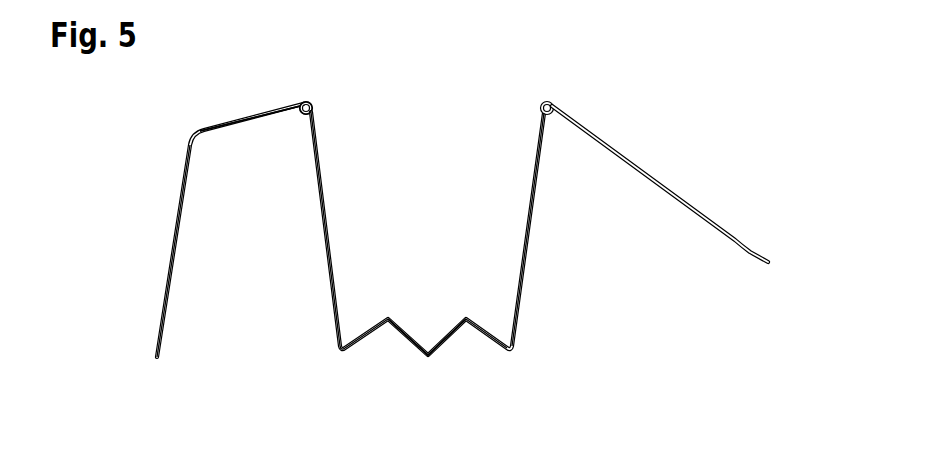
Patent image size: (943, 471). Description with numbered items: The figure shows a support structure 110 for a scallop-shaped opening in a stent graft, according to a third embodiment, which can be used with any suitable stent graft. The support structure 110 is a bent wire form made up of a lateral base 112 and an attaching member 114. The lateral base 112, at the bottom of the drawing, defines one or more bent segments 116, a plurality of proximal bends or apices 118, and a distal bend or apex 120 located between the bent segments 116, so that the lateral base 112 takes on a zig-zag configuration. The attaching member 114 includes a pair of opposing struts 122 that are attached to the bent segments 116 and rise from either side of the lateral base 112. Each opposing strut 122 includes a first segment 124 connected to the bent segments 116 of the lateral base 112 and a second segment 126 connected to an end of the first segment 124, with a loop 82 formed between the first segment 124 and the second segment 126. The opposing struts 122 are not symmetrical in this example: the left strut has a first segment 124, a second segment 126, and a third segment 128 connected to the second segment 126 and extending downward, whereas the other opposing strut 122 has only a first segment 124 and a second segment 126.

The support structure 110 is at (698, 70).
The lateral base 112 is at (384, 356).
The attaching member 114 is at (548, 233).
The bent segments 116 is at (340, 353).
The proximal bends or apices 118 is at (466, 318).
The distal bend or apex 120 is at (430, 358).
The opposing struts 122 is at (238, 92).
The first segment 124 is at (320, 200).
The second segment 126 is at (207, 127).
The third segment 128 is at (168, 262).
The loop 82 is at (313, 104).